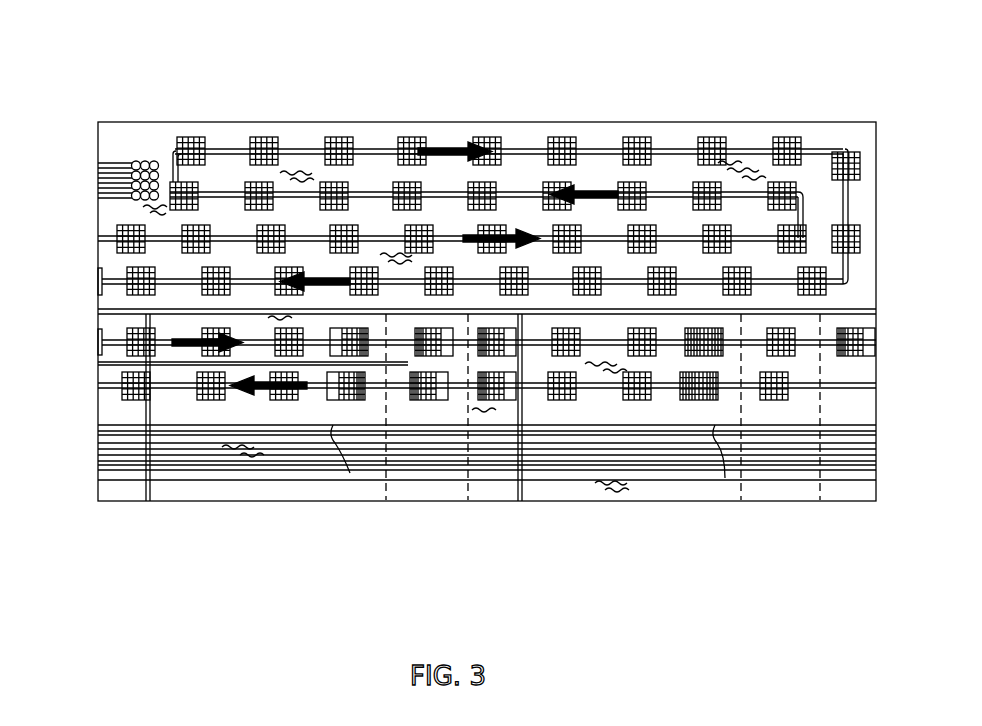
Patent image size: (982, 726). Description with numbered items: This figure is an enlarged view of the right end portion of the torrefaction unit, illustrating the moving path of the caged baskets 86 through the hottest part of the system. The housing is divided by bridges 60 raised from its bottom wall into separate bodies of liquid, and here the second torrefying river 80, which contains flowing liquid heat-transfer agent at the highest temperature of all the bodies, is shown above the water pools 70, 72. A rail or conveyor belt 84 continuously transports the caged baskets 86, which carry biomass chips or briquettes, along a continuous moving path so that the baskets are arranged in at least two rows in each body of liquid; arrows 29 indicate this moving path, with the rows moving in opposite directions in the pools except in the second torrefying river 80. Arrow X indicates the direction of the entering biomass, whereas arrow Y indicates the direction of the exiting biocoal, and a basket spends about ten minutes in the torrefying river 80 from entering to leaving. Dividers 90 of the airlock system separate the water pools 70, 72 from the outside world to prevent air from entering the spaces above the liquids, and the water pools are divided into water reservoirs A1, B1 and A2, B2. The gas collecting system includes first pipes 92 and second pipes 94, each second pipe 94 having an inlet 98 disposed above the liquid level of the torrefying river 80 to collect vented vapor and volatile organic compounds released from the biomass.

The arrows 29 is at (600, 192).
The bridges 60 is at (412, 493).
The water pool 70 is at (537, 507).
The water pool 72 is at (183, 507).
The second torrefying river 80 is at (467, 116).
The conveyor belt 84 is at (362, 192).
The caged baskets 86 is at (338, 137).
The dividers 90 is at (143, 423).
The first pipes 92 is at (380, 468).
The second pipes 94 is at (842, 430).
The inlet 98 is at (145, 162).
The water reservoir A1 is at (600, 405).
The water reservoir A2 is at (228, 410).
The water reservoir B1 is at (675, 320).
The water reservoir B2 is at (256, 325).
The arrow X is at (88, 238).
The arrow Y is at (90, 281).